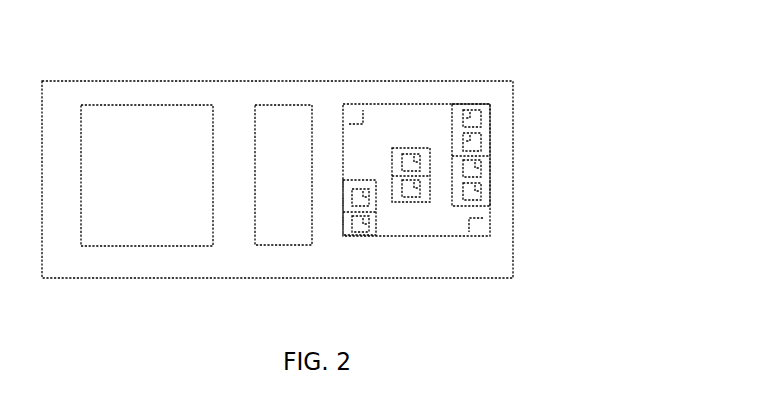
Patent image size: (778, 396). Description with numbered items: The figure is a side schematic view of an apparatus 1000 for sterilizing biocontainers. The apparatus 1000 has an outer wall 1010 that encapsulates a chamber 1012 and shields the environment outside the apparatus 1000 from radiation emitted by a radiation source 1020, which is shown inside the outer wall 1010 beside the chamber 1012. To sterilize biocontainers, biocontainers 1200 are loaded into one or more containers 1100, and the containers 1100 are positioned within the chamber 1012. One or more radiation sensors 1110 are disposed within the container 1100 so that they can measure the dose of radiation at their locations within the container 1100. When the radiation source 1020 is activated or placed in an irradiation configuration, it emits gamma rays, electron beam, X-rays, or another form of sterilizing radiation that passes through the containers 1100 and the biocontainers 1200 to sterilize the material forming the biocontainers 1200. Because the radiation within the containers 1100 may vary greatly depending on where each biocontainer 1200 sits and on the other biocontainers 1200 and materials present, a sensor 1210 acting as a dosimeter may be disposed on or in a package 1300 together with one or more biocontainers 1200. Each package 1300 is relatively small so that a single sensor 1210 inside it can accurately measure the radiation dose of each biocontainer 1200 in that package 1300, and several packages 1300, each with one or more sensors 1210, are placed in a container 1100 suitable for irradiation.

The apparatus 1000 is at (612, 170).
The outer wall 1010 is at (514, 103).
The chamber 1012 is at (415, 268).
The radiation source 1020 is at (304, 180).
The container 1100 is at (170, 100).
The radiation sensor 1110 is at (362, 110).
The biocontainer 1200 is at (350, 207).
The sensor 1210 is at (414, 181).
The package 1300 is at (357, 180).